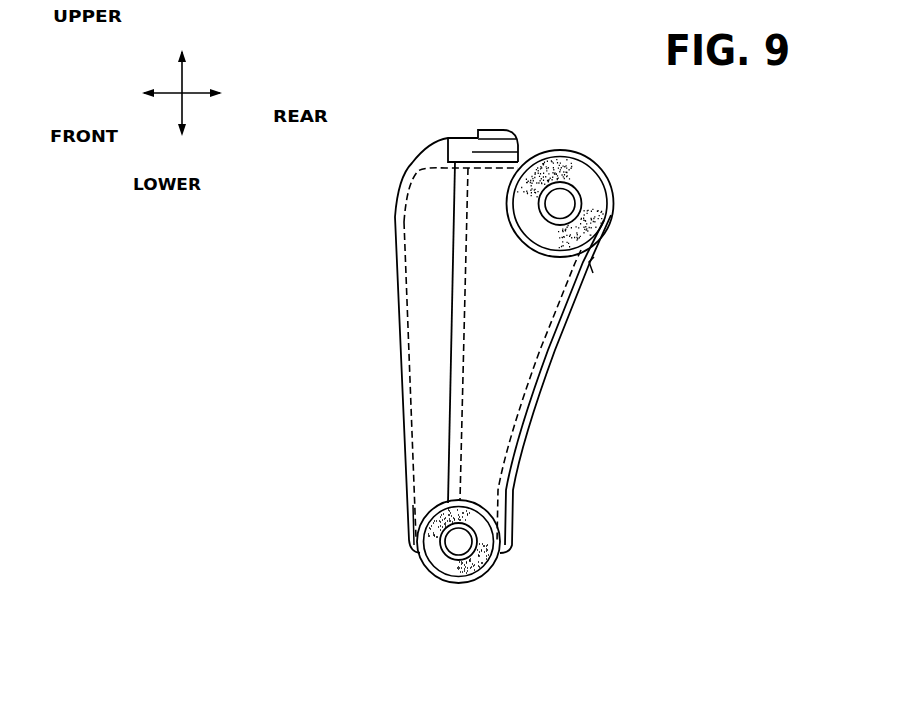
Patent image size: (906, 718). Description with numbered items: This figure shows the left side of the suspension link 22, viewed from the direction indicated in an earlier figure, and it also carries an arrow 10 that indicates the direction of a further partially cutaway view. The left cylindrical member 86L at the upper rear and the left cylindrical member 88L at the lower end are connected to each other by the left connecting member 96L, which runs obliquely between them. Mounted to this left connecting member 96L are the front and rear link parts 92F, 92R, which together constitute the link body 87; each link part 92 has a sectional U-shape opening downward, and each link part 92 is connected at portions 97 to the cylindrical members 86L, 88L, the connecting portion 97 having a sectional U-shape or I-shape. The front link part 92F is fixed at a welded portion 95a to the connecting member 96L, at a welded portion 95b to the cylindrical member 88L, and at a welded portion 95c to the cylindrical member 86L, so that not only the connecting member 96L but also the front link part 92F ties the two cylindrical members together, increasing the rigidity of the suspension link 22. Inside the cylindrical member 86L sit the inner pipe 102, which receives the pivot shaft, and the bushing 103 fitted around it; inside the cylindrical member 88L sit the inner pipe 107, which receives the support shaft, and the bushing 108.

The arrow 10 is at (670, 371).
The suspension link 22 is at (370, 251).
The link body 87 is at (389, 290).
The link part 92 is at (597, 264).
The rear link part 92R is at (489, 130).
The front link part 92F is at (429, 345).
The welded portion 95a is at (448, 137).
The welded portion 95b is at (413, 547).
The welded portion 95c is at (525, 131).
The left cylindrical member 86L is at (563, 152).
The left cylindrical member 88L is at (470, 580).
The left connecting member 96L is at (500, 375).
The connecting portion 97 is at (421, 530).
The inner pipe 102 is at (585, 170).
The bushing 103 is at (590, 188).
The inner pipe 107 is at (437, 577).
The bushing 108 is at (433, 551).